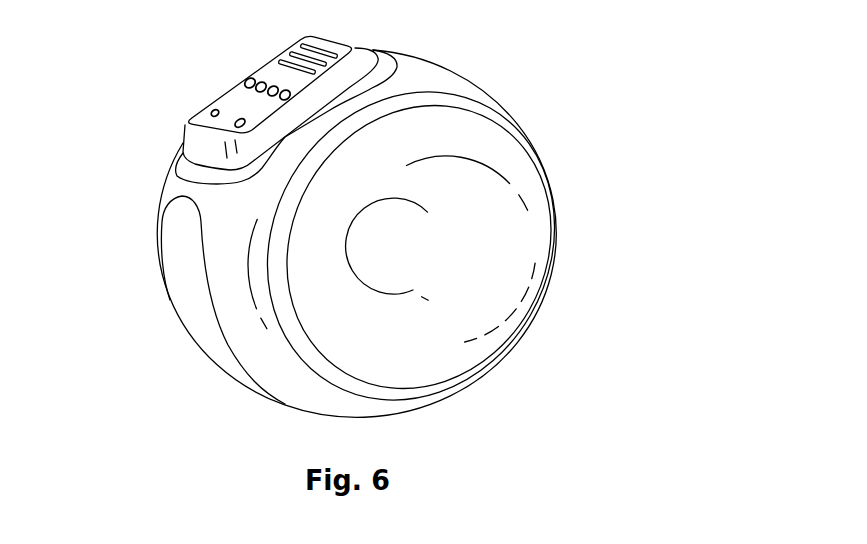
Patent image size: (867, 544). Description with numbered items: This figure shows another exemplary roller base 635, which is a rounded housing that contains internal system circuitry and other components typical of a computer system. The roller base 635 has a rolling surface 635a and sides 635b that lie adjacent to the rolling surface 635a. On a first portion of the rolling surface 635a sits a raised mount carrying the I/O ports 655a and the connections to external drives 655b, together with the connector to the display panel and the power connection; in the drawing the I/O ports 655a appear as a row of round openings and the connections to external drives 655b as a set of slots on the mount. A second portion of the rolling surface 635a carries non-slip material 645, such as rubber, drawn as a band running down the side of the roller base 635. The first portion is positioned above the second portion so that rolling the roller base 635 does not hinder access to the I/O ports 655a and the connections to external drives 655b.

The roller base 635 is at (436, 72).
The rolling surface 635a is at (500, 115).
The sides 635b is at (508, 243).
The non-slip material 645 is at (200, 322).
The I/O ports 655a is at (246, 82).
The connections to external drives 655b is at (280, 62).